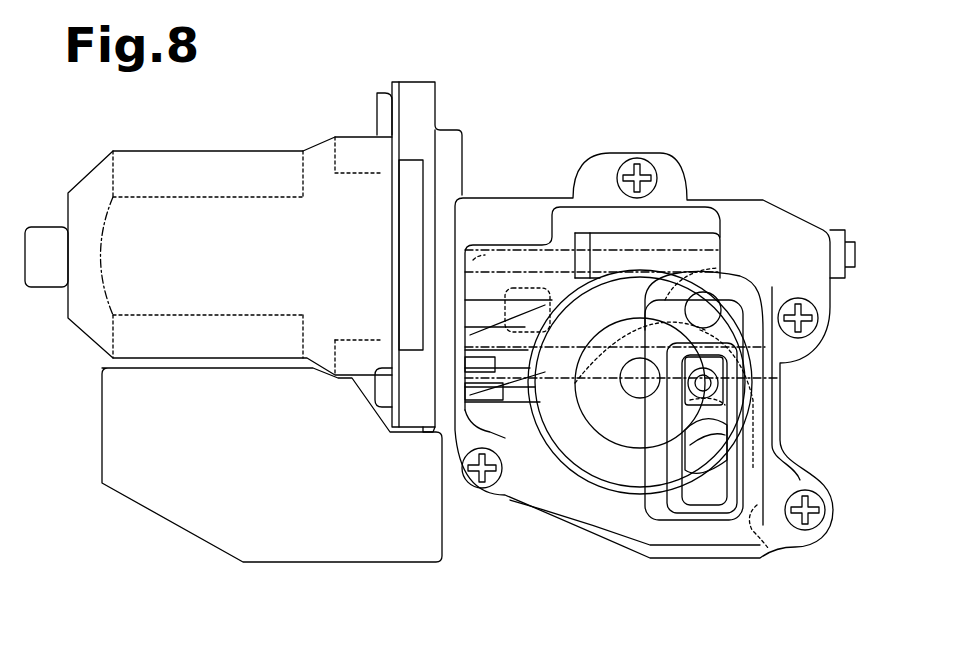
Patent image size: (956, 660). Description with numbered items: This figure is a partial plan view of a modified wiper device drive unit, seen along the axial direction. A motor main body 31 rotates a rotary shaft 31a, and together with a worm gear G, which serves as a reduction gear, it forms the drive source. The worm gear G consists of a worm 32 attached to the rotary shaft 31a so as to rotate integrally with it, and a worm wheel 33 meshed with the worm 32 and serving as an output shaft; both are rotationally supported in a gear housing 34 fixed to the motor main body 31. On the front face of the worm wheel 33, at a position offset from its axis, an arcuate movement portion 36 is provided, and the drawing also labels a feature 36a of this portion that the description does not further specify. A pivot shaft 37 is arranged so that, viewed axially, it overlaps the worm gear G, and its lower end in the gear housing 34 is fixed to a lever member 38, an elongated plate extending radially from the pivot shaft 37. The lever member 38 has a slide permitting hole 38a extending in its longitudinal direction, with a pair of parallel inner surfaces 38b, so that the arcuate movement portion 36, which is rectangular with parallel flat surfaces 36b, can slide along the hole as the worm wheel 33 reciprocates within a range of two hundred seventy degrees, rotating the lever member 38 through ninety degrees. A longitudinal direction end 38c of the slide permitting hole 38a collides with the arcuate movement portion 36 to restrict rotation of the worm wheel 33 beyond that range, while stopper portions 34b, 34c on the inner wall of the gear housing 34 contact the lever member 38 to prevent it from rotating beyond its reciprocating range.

The motor main body 31 is at (193, 160).
The rotary shaft 31a is at (562, 240).
The worm 32 is at (667, 230).
The worm wheel 33 is at (583, 483).
The gear housing 34 is at (628, 553).
The stopper portion 34b is at (768, 540).
The stopper portion 34c is at (503, 257).
The arcuate movement portion 36 is at (735, 392).
The connecting pin 36a is at (703, 385).
The parallel flat surfaces 36b is at (700, 325).
The pivot shaft 37 is at (703, 297).
The lever member 38 is at (767, 457).
The slide permitting hole 38a is at (720, 437).
The parallel inner surfaces 38b is at (718, 490).
The longitudinal direction end 38c is at (690, 372).
The worm gear G is at (693, 218).